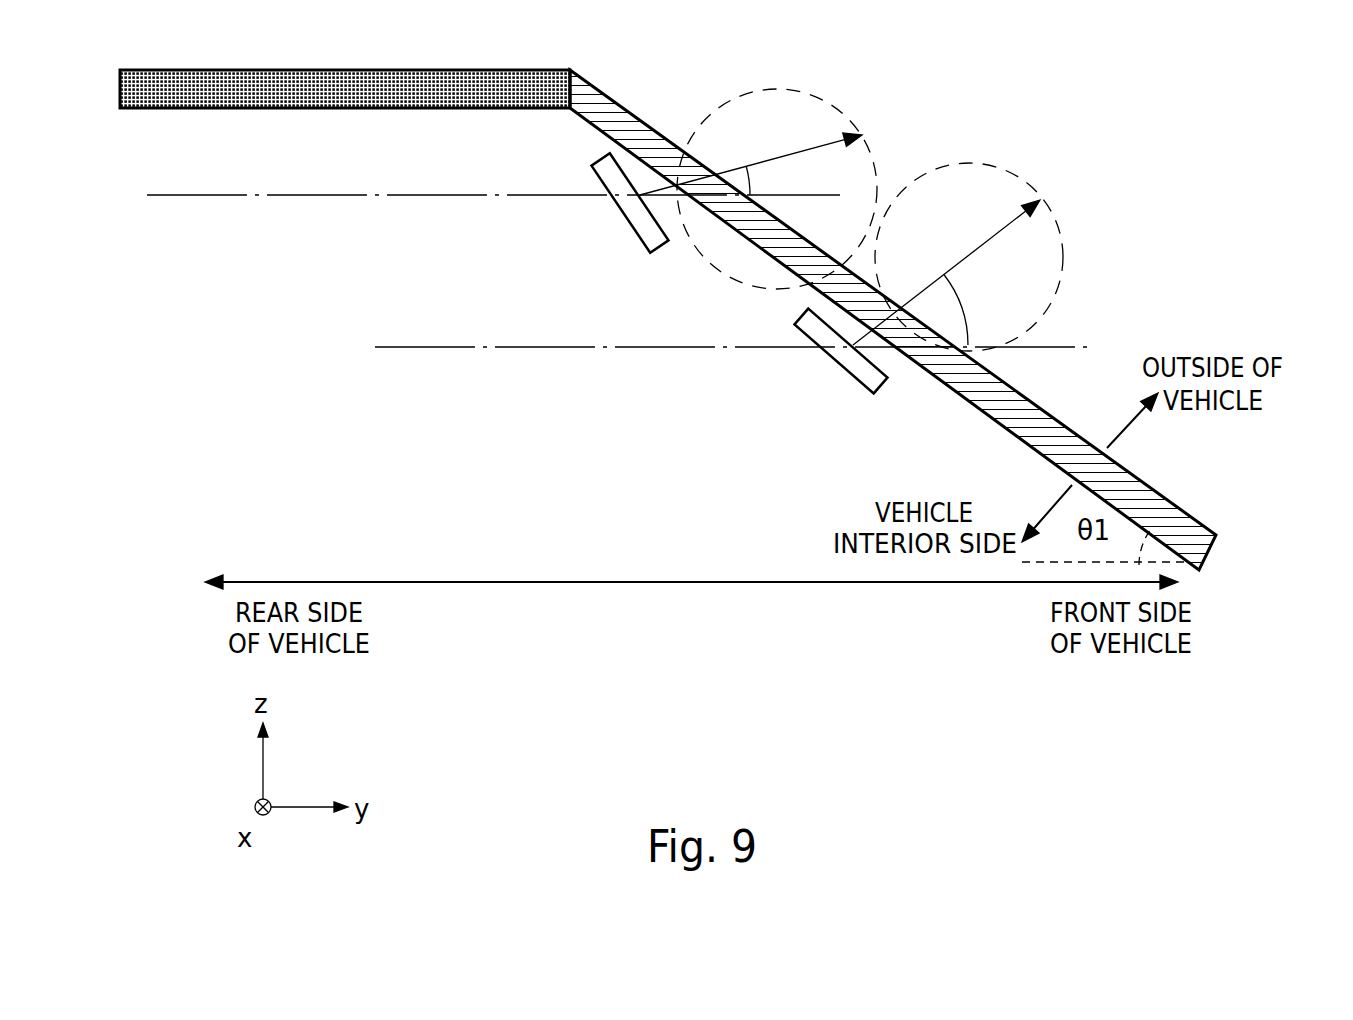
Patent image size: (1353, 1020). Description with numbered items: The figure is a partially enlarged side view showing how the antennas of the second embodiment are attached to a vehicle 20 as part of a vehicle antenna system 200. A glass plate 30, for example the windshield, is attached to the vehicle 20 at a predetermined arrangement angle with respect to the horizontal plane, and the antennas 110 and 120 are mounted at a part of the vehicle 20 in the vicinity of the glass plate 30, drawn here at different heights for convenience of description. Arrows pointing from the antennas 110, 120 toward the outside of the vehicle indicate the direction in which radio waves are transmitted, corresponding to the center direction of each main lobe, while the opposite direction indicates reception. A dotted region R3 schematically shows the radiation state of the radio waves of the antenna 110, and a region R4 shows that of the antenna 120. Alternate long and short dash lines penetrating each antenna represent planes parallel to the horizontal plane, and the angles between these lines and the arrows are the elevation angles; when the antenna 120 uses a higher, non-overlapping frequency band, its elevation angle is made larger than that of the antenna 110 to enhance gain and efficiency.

The vehicle 20 is at (438, 68).
The glass plate 30 is at (1140, 480).
The antenna 110 is at (632, 228).
The antenna 120 is at (840, 367).
The vehicle antenna system 200 is at (583, 398).
The region R3 is at (767, 88).
The region R4 is at (980, 163).